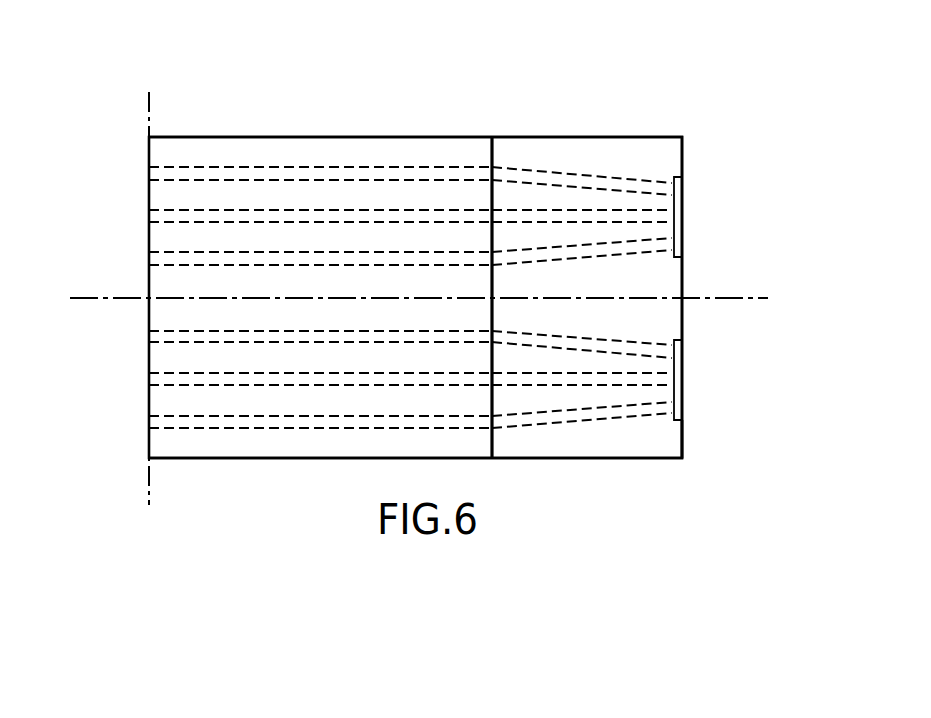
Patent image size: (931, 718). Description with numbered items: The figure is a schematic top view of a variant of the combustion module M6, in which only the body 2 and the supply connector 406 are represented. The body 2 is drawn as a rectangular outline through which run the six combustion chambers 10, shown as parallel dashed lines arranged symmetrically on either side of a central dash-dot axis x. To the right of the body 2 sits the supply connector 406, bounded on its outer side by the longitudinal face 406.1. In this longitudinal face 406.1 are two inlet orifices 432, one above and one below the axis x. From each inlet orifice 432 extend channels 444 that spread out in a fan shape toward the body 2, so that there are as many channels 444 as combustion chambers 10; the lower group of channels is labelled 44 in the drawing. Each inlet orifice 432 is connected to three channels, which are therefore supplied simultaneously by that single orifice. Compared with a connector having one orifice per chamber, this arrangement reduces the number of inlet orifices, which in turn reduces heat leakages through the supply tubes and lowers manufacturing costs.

The body 2 is at (314, 127).
The combustion chambers 10 is at (220, 222).
The combustion module M6 is at (420, 102).
The channels 444 is at (537, 220).
The lower fiber group in holder 44 is at (540, 378).
The supply connector 406 is at (677, 130).
The inlet orifices 432 is at (680, 181).
The longitudinal face 406.1 is at (685, 440).
The longitudinal axis x is at (88, 296).